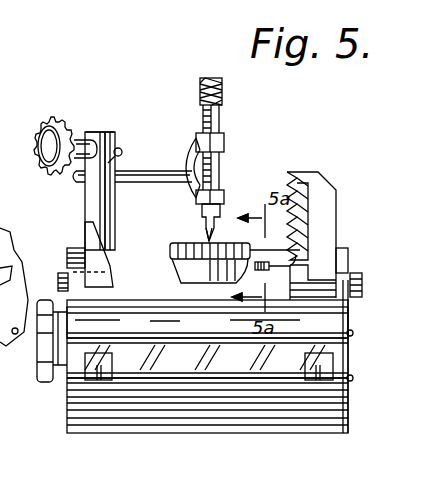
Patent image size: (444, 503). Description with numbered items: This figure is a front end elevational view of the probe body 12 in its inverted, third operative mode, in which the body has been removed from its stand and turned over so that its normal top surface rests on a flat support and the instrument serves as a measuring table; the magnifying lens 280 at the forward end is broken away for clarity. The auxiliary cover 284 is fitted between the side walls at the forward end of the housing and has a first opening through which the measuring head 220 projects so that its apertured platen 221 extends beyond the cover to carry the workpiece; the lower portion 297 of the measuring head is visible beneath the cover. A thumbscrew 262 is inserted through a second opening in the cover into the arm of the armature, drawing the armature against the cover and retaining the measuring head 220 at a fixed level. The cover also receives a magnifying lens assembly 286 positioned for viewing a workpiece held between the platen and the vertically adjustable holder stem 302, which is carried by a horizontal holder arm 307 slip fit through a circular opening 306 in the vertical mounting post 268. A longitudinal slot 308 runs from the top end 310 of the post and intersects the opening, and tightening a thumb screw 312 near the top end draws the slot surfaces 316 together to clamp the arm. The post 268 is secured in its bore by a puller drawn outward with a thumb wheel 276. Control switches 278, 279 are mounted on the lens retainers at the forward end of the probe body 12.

The probe body 12 is at (213, 436).
The measuring head 220 is at (174, 267).
The apertured platen 221 is at (206, 236).
The thumbscrew 262 is at (308, 257).
The mounting post 268 is at (118, 236).
The thumb wheel 276 is at (46, 383).
The control switch 278 is at (318, 380).
The control switch 279 is at (99, 380).
The magnifying lens 280 is at (252, 362).
The auxiliary cover 284 is at (346, 324).
The magnifying lens assembly 286 is at (303, 195).
The roller body 297 is at (196, 278).
The holder stem 302 is at (220, 120).
The circular opening 306 is at (100, 186).
The arm 307 is at (132, 190).
The longitudinal slot 308 is at (116, 133).
The top end 310 is at (100, 131).
The thumb screw 312 is at (58, 114).
The slot surfaces 316 is at (122, 156).